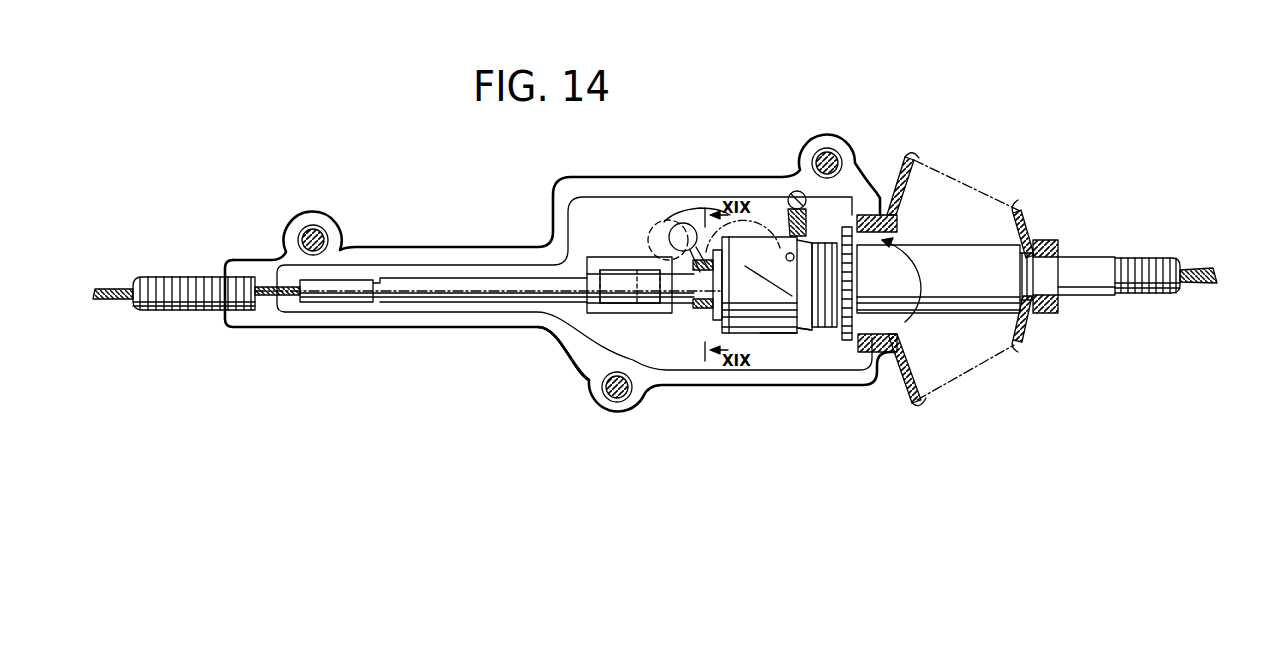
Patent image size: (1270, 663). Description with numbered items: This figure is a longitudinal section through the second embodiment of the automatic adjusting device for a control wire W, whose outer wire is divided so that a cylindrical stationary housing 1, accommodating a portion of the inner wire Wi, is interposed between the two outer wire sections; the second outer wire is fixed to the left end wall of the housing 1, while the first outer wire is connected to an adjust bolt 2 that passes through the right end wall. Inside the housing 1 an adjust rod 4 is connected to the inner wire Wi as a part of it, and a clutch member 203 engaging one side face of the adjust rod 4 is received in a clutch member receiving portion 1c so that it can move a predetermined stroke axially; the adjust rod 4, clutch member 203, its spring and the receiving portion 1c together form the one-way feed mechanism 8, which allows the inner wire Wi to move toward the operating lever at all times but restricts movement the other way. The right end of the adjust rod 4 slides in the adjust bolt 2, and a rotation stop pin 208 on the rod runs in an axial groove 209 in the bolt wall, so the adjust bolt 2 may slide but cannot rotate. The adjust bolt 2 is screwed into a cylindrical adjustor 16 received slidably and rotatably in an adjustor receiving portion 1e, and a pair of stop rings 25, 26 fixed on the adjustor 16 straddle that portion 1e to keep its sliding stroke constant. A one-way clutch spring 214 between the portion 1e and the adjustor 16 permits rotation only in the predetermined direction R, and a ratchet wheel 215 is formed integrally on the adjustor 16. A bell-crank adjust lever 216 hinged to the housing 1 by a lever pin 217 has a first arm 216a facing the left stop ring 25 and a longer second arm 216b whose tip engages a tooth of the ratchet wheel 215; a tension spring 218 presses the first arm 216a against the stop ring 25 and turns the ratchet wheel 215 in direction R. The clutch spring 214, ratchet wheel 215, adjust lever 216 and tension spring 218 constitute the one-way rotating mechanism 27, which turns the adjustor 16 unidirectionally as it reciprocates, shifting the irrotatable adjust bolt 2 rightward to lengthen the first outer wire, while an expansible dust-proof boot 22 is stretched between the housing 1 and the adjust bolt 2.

The stationary housing 1 is at (617, 178).
The clutch member receiving portion 1c is at (622, 313).
The adjustor receiving portion 1e is at (773, 318).
The adjust bolt 2 is at (1083, 268).
The adjust rod 4 is at (461, 282).
The one-way feed mechanism 8 is at (599, 319).
The adjustor 16 is at (941, 252).
The dust-proof boot 22 is at (1023, 213).
The stop ring 25 is at (720, 320).
The stop ring 26 is at (806, 250).
The one-way rotating mechanism 27 is at (812, 330).
The clutch member 203 is at (617, 274).
The rotation stop pin 208 is at (703, 271).
The axial groove 209 is at (692, 263).
The one-way clutch spring 214 is at (803, 325).
The ratchet wheel 215 is at (845, 336).
The adjust lever 216 is at (686, 230).
The first arm 216a is at (688, 306).
The second arm 216b is at (757, 286).
The lever pin 217 is at (678, 214).
The tension spring 218 is at (780, 253).
The predetermined direction R is at (917, 280).
The control wire W is at (1228, 210).
The inner wire Wi is at (1203, 270).